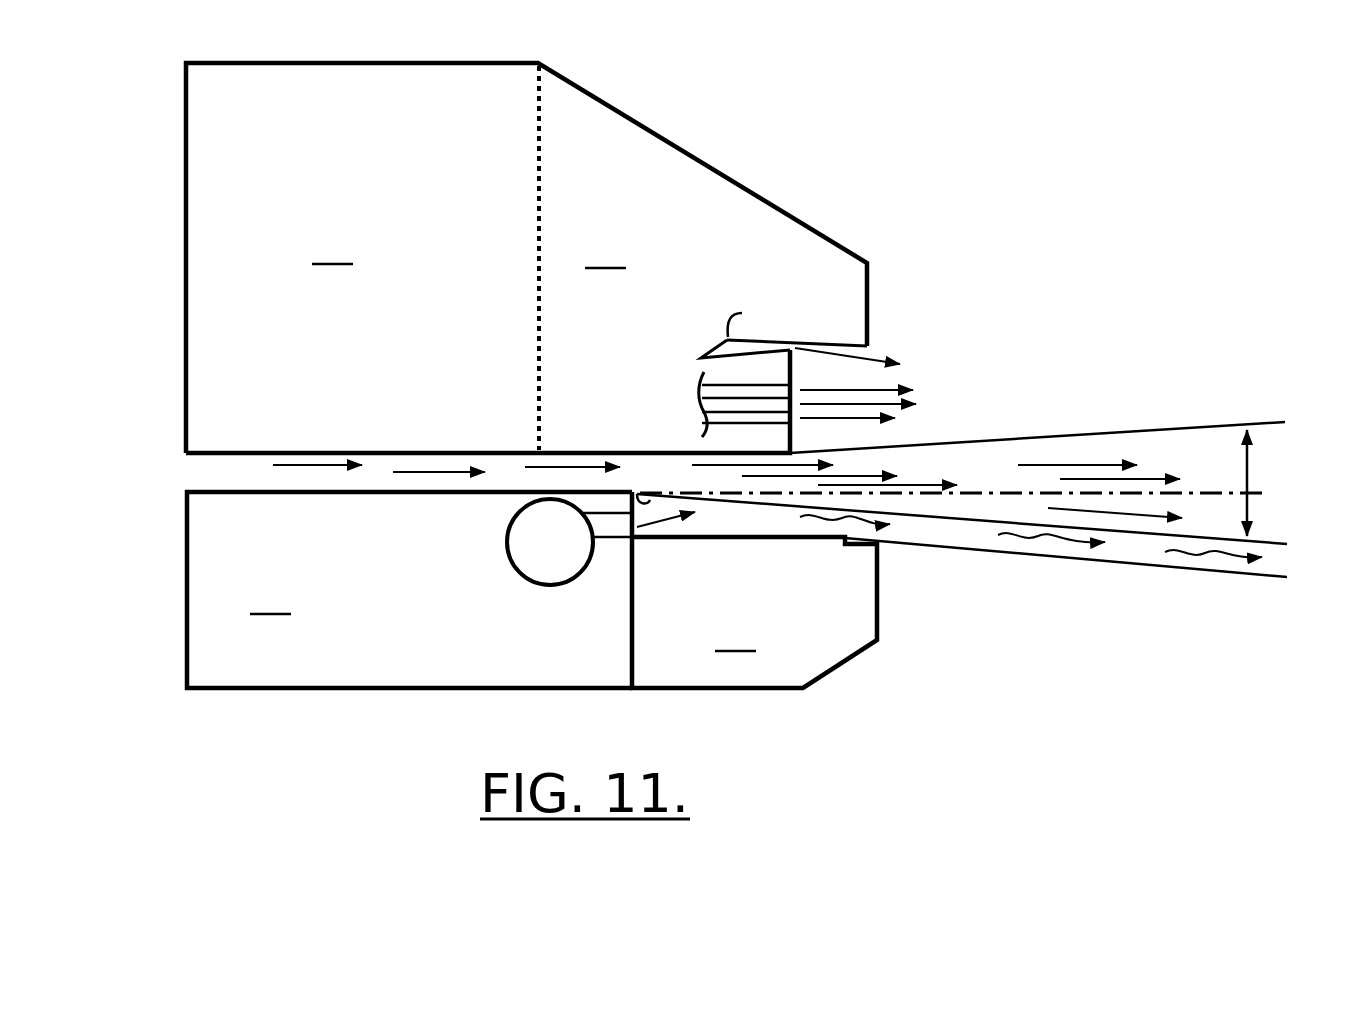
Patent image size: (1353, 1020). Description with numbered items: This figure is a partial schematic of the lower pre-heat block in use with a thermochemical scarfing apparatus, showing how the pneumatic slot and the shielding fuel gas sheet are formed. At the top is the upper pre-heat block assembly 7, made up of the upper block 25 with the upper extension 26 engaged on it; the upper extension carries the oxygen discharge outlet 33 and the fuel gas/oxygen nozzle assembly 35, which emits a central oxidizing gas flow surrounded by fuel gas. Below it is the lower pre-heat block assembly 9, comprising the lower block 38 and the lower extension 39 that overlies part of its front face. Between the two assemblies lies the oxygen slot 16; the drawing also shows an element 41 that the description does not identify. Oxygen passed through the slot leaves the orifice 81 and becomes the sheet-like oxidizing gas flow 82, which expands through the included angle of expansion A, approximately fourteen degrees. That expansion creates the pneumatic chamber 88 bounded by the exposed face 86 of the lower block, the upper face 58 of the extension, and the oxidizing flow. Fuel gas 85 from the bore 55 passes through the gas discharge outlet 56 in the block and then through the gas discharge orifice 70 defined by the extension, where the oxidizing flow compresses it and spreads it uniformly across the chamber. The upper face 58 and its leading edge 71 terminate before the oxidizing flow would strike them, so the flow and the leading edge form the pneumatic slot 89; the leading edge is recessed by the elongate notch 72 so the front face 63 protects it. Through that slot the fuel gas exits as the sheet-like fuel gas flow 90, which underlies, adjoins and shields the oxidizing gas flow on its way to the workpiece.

The upper pre-heat block assembly 7 is at (732, 138).
The lower pre-heat block assembly 9 is at (315, 800).
The oxygen slot 16 is at (235, 477).
The upper block 25 is at (333, 246).
The upper extension 26 is at (606, 250).
The oxygen discharge outlet 33 is at (777, 337).
The fuel gas/oxygen nozzle assembly 35 is at (748, 400).
The lower block 38 is at (409, 590).
The lower extension 39 is at (754, 590).
The fan stream flow 41 is at (380, 490).
The bore 55 is at (515, 547).
The gas discharge outlet 56 is at (612, 540).
The upper face 58 is at (740, 538).
The front face 63 is at (877, 643).
The gas discharge orifice 70 is at (637, 533).
The leading edge 71 is at (840, 540).
The elongate notch 72 is at (895, 529).
The orifice 81 is at (688, 460).
The sheet-like oxidizing gas flow 82 is at (1208, 473).
The fuel gas 85 is at (540, 565).
The exposed face 86 is at (643, 493).
The pneumatic chamber 88 is at (763, 513).
The pneumatic slot 89 is at (920, 525).
The sheet-like fuel gas flow 90 is at (1190, 560).
The included angle of expansion A is at (1268, 484).